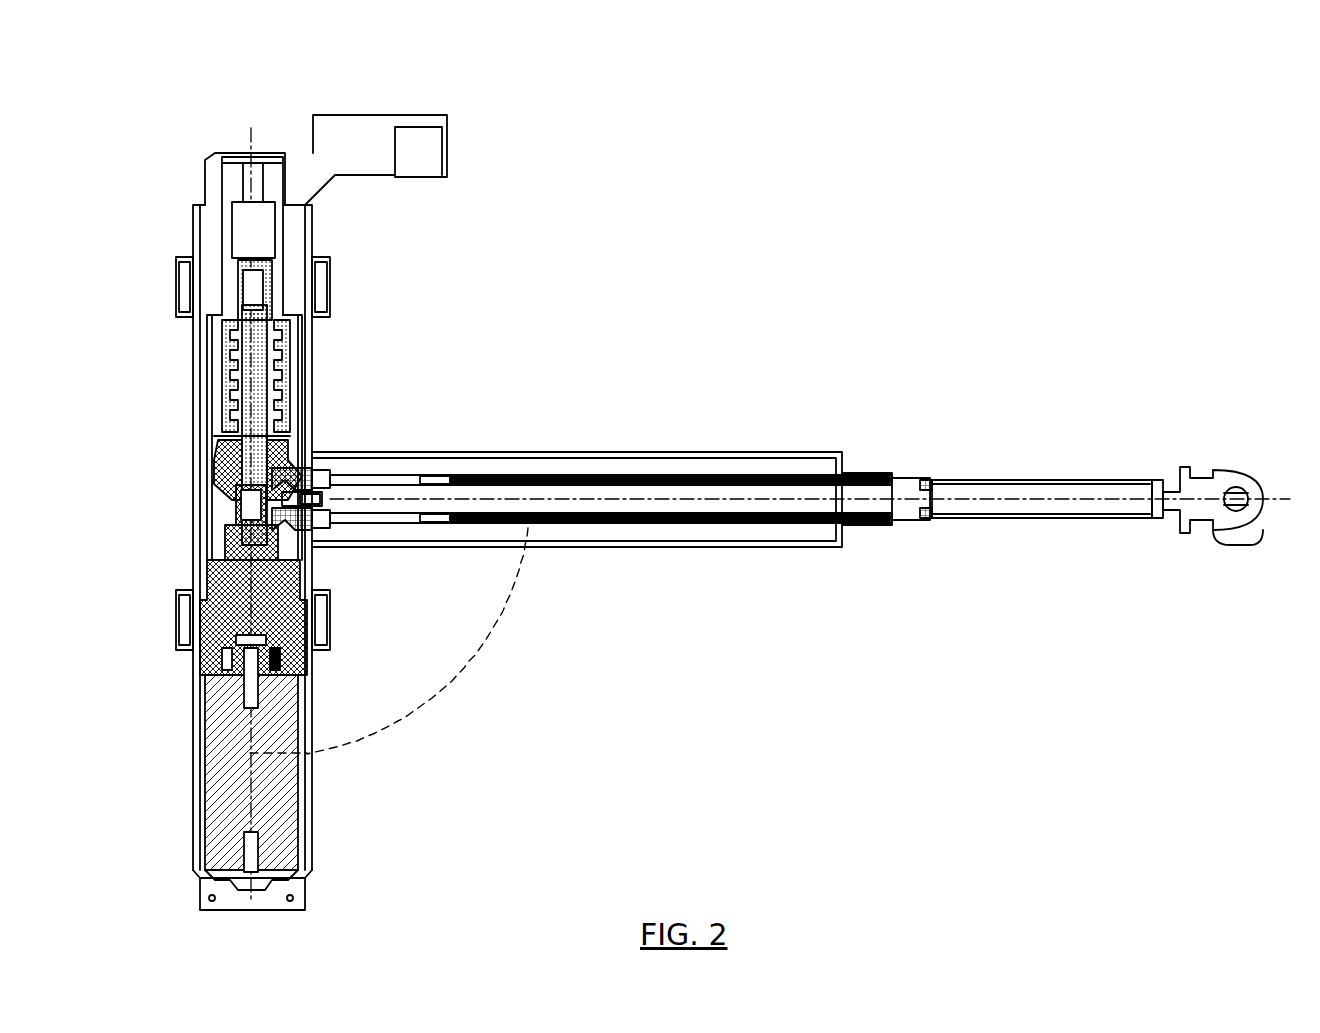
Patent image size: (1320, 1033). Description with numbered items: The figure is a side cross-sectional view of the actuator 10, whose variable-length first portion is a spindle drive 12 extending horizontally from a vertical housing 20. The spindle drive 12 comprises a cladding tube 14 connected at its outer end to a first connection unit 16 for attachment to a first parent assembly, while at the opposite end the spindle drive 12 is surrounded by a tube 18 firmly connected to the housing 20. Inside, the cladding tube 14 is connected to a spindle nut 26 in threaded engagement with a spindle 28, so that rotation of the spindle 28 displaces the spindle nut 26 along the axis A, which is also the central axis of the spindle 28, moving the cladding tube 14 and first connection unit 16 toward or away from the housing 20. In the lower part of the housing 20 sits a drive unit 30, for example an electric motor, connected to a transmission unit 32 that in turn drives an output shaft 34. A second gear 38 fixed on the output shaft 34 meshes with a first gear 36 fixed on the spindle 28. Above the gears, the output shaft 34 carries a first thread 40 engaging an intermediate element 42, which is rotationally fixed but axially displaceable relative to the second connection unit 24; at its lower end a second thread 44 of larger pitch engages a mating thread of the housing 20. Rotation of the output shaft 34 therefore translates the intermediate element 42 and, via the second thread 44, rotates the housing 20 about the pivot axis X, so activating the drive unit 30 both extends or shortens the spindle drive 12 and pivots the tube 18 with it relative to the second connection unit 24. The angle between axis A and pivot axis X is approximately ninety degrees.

The actuator 10 is at (780, 148).
The spindle drive 12 is at (928, 552).
The cladding tube 14 is at (1023, 486).
The first connection unit 16 is at (1212, 480).
The tube 18 is at (645, 455).
The housing 20 is at (192, 547).
The second connection unit 24 is at (407, 148).
The spindle nut 26 is at (453, 476).
The spindle 28 is at (820, 490).
The drive unit 30 is at (283, 785).
The transmission unit 32 is at (295, 636).
The output shaft 34 is at (248, 490).
The first gear 36 is at (296, 480).
The second gear 38 is at (276, 452).
The first thread 40 is at (266, 345).
The intermediate element 42 is at (268, 283).
The second thread 44 is at (286, 392).
The pivot axis X is at (252, 152).
The axis A is at (1095, 498).